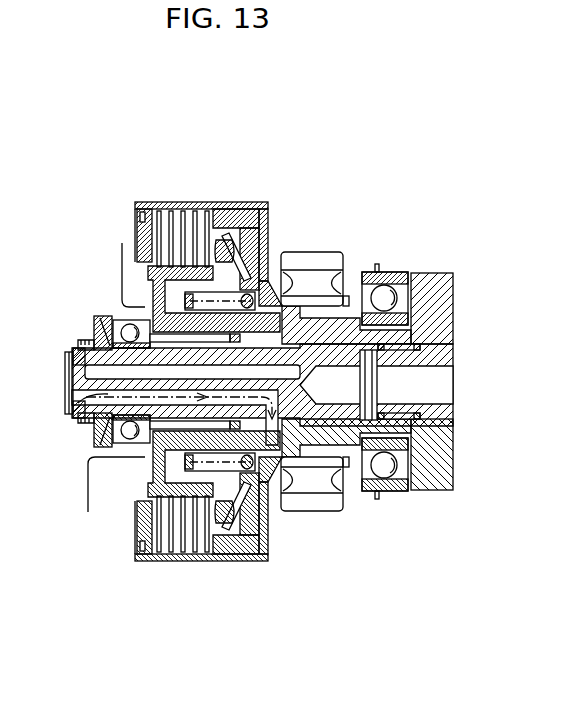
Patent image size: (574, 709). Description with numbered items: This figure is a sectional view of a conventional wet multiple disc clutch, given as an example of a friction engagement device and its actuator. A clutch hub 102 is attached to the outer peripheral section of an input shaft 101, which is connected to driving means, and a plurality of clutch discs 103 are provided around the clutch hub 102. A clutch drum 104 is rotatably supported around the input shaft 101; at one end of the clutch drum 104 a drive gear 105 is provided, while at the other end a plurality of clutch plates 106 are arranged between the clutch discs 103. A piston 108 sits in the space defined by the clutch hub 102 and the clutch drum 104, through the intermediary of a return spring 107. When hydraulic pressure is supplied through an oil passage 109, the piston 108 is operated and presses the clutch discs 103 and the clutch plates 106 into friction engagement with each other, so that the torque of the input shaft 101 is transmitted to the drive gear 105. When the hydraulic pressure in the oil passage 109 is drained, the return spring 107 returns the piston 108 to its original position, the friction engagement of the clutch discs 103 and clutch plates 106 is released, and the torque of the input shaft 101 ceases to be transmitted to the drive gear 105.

The input shaft 101 is at (448, 308).
The clutch hub 102 is at (150, 297).
The clutch discs 103 is at (157, 210).
The clutch drum 104 is at (238, 210).
The drive gear 105 is at (318, 268).
The clutch plates 106 is at (176, 210).
The return spring 107 is at (178, 464).
The piston 108 is at (234, 562).
The oil passage 109 is at (65, 411).